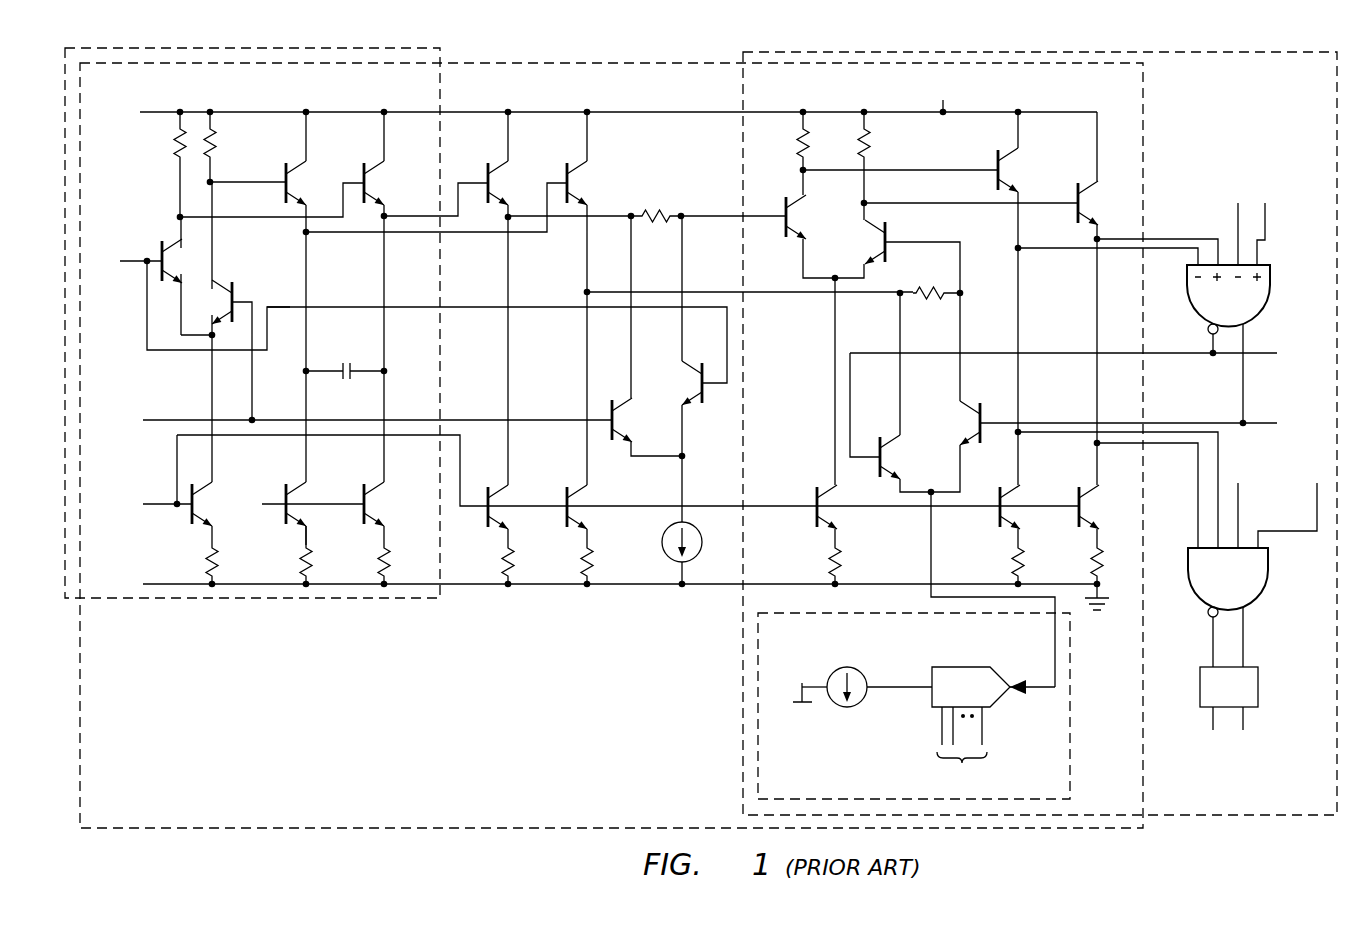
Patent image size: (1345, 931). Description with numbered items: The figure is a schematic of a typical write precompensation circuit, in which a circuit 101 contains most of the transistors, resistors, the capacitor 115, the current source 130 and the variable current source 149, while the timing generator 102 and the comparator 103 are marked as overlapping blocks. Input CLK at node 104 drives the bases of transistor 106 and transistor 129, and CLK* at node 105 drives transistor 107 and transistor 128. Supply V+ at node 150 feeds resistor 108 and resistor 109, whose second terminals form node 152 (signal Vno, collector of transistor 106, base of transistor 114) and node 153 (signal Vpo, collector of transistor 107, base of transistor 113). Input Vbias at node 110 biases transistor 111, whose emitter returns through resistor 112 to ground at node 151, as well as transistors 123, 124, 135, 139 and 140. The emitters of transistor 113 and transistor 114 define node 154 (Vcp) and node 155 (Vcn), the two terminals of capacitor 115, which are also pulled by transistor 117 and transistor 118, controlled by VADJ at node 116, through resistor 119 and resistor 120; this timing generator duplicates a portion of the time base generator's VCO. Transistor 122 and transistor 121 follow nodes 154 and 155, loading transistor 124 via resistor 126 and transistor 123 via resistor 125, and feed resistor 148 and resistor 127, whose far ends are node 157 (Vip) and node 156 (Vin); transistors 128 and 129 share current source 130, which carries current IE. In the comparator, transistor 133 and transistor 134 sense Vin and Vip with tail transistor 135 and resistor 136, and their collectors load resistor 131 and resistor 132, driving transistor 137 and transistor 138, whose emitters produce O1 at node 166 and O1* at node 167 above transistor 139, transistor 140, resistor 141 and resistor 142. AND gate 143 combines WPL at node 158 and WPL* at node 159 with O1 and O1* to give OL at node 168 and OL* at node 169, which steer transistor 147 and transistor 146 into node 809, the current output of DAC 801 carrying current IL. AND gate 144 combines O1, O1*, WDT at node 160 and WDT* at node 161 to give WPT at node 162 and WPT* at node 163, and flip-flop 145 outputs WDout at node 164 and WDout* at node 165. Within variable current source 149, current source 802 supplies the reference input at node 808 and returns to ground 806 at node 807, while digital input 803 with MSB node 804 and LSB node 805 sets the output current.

The circuit 101 is at (1100, 830).
The timing generator 102 is at (250, 600).
The comparator 103 is at (1245, 818).
The node 104 is at (140, 265).
The node 105 is at (155, 418).
The transistor 106 is at (158, 250).
The transistor 107 is at (245, 288).
The resistor 108 is at (175, 140).
The resistor 109 is at (216, 140).
The node 110 is at (160, 494).
The transistor 111 is at (198, 522).
The resistor 112 is at (207, 560).
The transistor 113 is at (282, 166).
The transistor 114 is at (363, 165).
The capacitor 115 is at (343, 360).
The node 116 is at (278, 494).
The transistor 117 is at (290, 522).
The transistor 118 is at (372, 492).
The resistor 119 is at (302, 560).
The resistor 120 is at (380, 560).
The transistor 121 is at (498, 163).
The transistor 122 is at (577, 163).
The transistor 123 is at (498, 488).
The transistor 124 is at (577, 488).
The resistor 125 is at (504, 556).
The resistor 126 is at (583, 556).
The resistor 127 is at (655, 228).
The transistor 128 is at (621, 404).
The transistor 129 is at (690, 362).
The current source 130 is at (662, 542).
The resistor 131 is at (798, 143).
The resistor 132 is at (870, 142).
The transistor 133 is at (798, 202).
The transistor 134 is at (890, 232).
The transistor 135 is at (813, 492).
The resistor 136 is at (832, 556).
The transistor 137 is at (990, 158).
The transistor 138 is at (1083, 182).
The transistor 139 is at (996, 528).
The transistor 140 is at (1084, 488).
The resistor 141 is at (1013, 556).
The resistor 142 is at (1093, 556).
The AND gate 143 is at (1270, 296).
The AND gate 144 is at (1270, 566).
The flip-flop 145 is at (1262, 690).
The transistor 146 is at (885, 440).
The transistor 147 is at (976, 400).
The resistor 148 is at (930, 302).
The variable current source 149 is at (1072, 742).
The node 150 is at (938, 108).
The node 151 is at (1100, 620).
The node 152 is at (177, 178).
The node 153 is at (220, 188).
The node 154 is at (312, 262).
The node 155 is at (380, 280).
The node 156 is at (720, 222).
The node 157 is at (962, 255).
The node 158 is at (1270, 232).
The node 159 is at (1236, 232).
The node 160 is at (1240, 500).
The node 161 is at (1315, 505).
The node 162 is at (1207, 627).
The node 163 is at (1256, 627).
The node 164 is at (1210, 722).
The node 165 is at (1250, 718).
The node 166 is at (1022, 290).
The node 167 is at (1094, 318).
The node 168 is at (1258, 420).
The node 169 is at (1226, 360).
The digital-to-analog converter 801 is at (948, 665).
The current source 802 is at (848, 710).
The digital input 803 is at (962, 750).
The node 804 is at (935, 716).
The node 805 is at (987, 716).
The ground 806 is at (800, 710).
The node 807 is at (813, 682).
The node 808 is at (897, 682).
The node 809 is at (1050, 648).